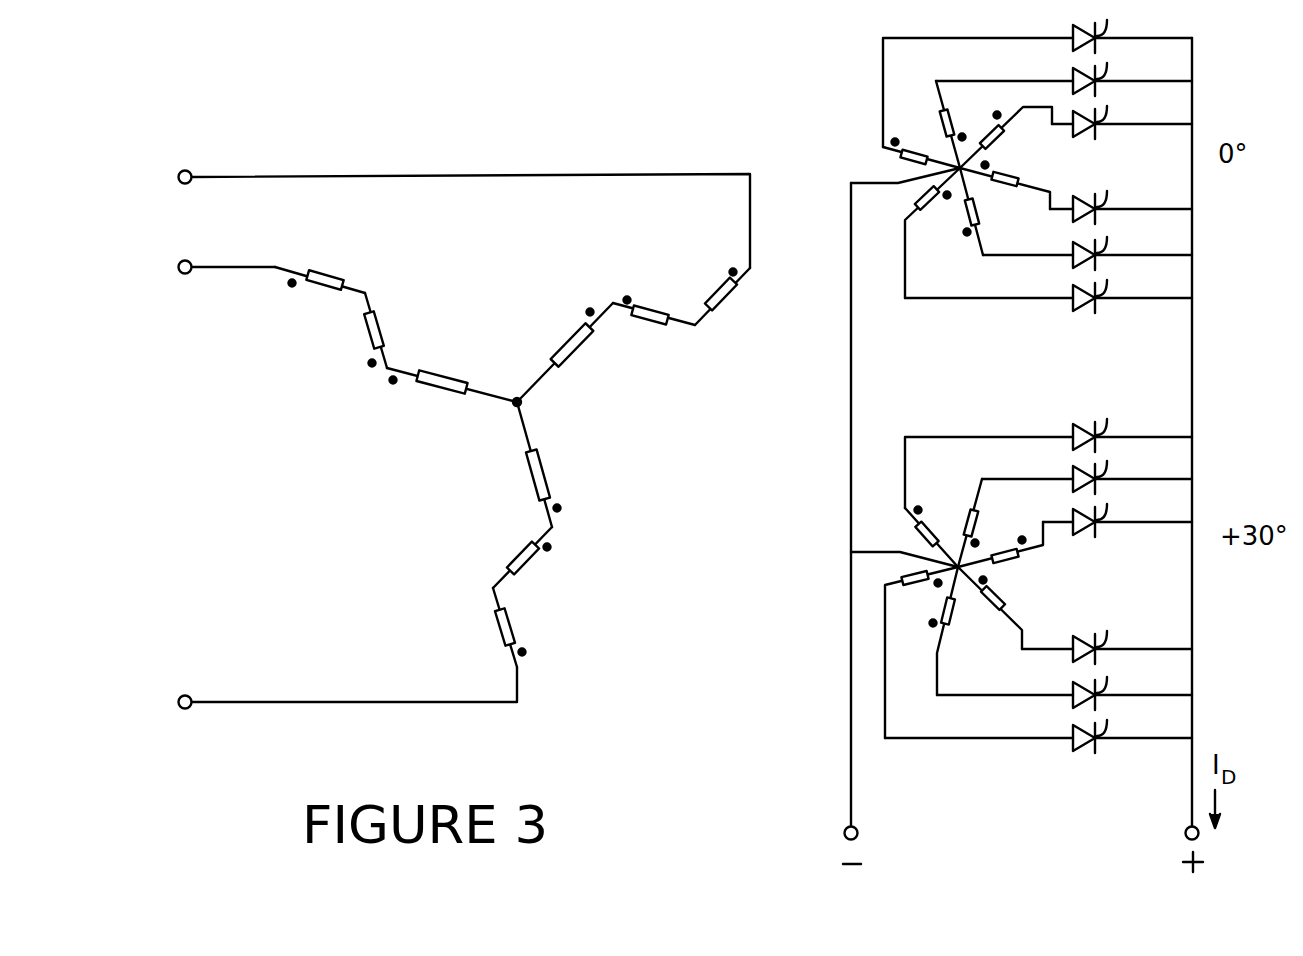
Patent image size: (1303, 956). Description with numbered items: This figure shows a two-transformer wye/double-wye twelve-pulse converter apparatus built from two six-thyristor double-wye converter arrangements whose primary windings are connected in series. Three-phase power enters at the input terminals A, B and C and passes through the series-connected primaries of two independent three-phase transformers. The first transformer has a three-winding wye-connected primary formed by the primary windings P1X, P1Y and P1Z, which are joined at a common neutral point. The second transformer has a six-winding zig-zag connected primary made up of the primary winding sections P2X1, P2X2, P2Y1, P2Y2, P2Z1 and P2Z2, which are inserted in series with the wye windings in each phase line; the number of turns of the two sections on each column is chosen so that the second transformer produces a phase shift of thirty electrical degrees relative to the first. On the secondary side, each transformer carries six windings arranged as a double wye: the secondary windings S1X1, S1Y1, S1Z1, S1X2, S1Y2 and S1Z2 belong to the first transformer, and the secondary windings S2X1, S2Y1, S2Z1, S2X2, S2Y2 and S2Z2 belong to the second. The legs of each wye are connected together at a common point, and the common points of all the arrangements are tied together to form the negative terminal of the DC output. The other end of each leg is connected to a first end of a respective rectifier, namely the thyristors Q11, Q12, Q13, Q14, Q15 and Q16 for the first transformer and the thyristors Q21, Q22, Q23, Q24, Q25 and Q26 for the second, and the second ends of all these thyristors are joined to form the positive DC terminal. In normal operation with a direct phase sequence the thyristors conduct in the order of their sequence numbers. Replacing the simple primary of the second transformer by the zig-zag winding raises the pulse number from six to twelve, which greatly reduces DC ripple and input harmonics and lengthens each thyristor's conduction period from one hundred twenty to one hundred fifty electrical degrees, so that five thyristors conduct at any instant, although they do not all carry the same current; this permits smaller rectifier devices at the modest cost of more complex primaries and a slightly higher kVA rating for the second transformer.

The phase A input terminal A is at (445, 214).
The phase B input terminal B is at (327, 692).
The phase C input terminal C is at (207, 268).
The primary winding P1X is at (561, 352).
The primary winding P1Y is at (558, 464).
The primary winding P1Z is at (452, 397).
The primary winding P2X1 is at (705, 291).
The primary winding P2X2 is at (497, 557).
The primary winding P2Y1 is at (541, 627).
The primary winding P2Y2 is at (409, 330).
The primary winding P2Z1 is at (333, 268).
The primary winding P2Z2 is at (660, 331).
The secondary winding S1X1 is at (1017, 137).
The secondary winding S1X2 is at (906, 233).
The secondary winding S1Y1 is at (1005, 211).
The secondary winding S1Y2 is at (974, 124).
The secondary winding S1Z1 is at (900, 160).
The secondary winding S1Z2 is at (1023, 183).
The secondary winding S2X1 is at (1024, 554).
The secondary winding S2X2 is at (910, 652).
The secondary winding S2Y1 is at (973, 631).
The secondary winding S2Y2 is at (1005, 523).
The secondary winding S2Z1 is at (906, 537).
The secondary winding S2Z2 is at (1018, 608).
The thyristor Q11 is at (1122, 115).
The thyristor Q12 is at (1121, 202).
The thyristor Q13 is at (1087, 247).
The thyristor Q14 is at (1048, 290).
The thyristor Q15 is at (1037, 77).
The thyristor Q16 is at (1064, 72).
The thyristor Q21 is at (1117, 513).
The thyristor Q22 is at (1107, 641).
The thyristor Q23 is at (1064, 686).
The thyristor Q24 is at (1038, 729).
The thyristor Q25 is at (1048, 456).
The thyristor Q26 is at (1087, 471).